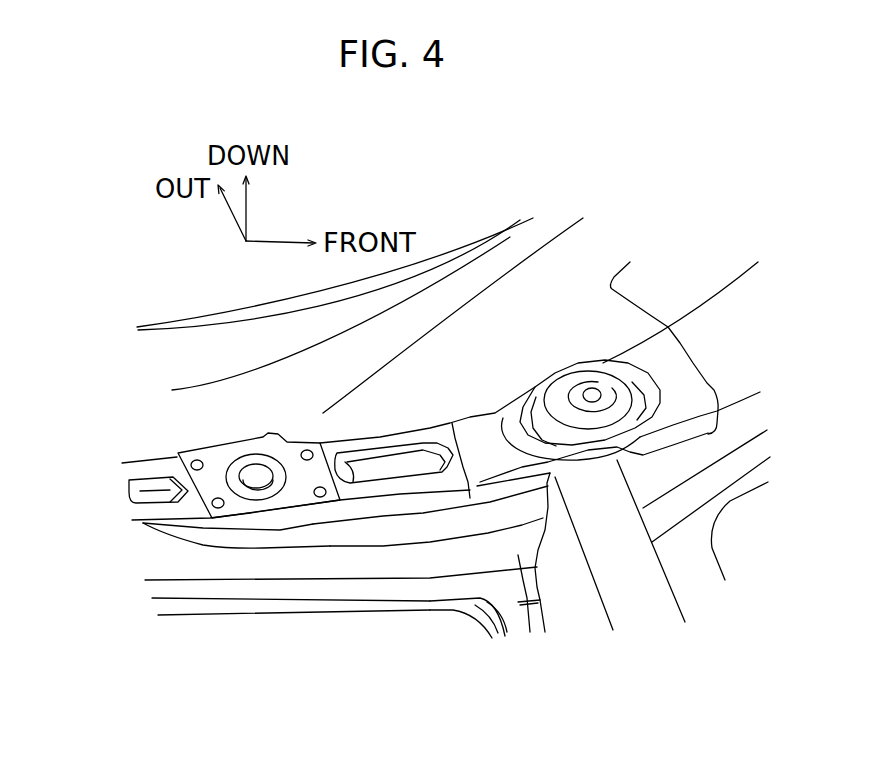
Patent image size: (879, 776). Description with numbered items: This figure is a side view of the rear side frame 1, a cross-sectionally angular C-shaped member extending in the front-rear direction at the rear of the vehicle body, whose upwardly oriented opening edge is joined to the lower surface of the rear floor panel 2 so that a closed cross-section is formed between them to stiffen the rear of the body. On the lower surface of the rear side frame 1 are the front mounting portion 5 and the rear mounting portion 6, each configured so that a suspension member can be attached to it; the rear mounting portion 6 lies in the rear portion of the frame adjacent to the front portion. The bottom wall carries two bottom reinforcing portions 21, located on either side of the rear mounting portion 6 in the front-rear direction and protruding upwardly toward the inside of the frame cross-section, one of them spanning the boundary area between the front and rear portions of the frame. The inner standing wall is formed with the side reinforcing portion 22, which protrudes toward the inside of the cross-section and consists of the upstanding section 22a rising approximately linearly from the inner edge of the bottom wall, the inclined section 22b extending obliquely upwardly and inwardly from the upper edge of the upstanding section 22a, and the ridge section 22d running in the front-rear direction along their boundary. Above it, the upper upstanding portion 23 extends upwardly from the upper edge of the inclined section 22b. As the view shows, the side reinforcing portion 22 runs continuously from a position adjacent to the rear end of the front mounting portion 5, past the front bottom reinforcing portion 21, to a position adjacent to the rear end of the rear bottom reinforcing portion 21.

The rear side frame 1 is at (267, 567).
The rear floor panel 2 is at (398, 625).
The front mounting portion 5 is at (571, 369).
The rear mounting portion 6 is at (240, 463).
The bottom reinforcing portion 21 is at (140, 485).
The side reinforcing portion 22 is at (441, 436).
The upstanding section 22a is at (313, 521).
The inclined section 22b is at (482, 518).
The ridge section 22d is at (424, 515).
The upper upstanding portion 23 is at (545, 632).